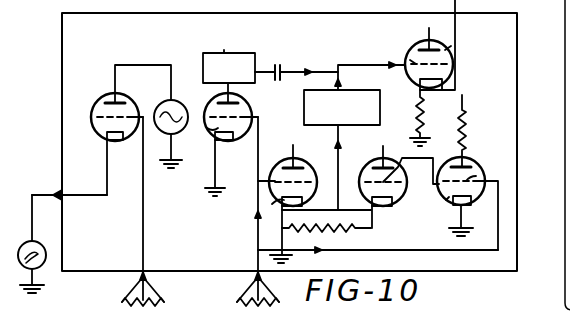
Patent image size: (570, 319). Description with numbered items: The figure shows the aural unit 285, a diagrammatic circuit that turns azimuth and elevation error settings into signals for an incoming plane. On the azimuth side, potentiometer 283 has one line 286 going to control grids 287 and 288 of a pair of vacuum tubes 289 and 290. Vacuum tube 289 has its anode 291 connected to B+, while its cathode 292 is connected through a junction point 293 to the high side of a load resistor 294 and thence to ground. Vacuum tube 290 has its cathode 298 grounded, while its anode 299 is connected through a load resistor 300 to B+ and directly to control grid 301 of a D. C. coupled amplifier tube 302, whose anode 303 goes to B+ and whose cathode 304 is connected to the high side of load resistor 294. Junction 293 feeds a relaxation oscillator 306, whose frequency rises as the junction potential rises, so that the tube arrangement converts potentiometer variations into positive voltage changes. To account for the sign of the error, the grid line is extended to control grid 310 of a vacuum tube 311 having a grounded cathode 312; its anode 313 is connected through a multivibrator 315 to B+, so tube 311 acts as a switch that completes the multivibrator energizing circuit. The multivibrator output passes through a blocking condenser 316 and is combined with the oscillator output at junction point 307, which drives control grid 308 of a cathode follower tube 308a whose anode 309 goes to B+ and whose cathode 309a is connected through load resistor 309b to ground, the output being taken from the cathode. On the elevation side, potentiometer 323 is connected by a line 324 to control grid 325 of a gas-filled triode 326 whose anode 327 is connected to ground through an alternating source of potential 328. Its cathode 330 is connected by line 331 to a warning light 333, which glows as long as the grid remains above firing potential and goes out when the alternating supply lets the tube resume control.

The potentiometer 283 is at (244, 294).
The aural unit 285 is at (289, 135).
The line 286 is at (255, 262).
The control grid 287 is at (258, 180).
The control grid 288 is at (476, 176).
The vacuum tube 289 is at (272, 204).
The vacuum tube 290 is at (446, 200).
The anode 291 is at (298, 157).
The cathode 292 is at (319, 230).
The junction point 293 is at (340, 211).
The load resistor 294 is at (340, 232).
The cathode 298 is at (462, 212).
The anode 299 is at (463, 163).
The load resistor 300 is at (467, 127).
The control grid 301 is at (400, 161).
The D. C. coupled amplifier tube 302 is at (385, 150).
The anode 303 is at (372, 153).
The cathode 304 is at (372, 212).
The relaxation oscillator 306 is at (336, 128).
The junction point 307 is at (338, 71).
The control grid 308 is at (410, 60).
The cathode follower tube 308a is at (451, 46).
The anode 309 is at (428, 44).
The cathode 309a is at (453, 70).
The load resistor 309b is at (413, 112).
The control grid 310 is at (238, 118).
The vacuum tube 311 is at (208, 129).
The cathode 312 is at (224, 164).
The anode 313 is at (228, 90).
The multivibrator 315 is at (209, 54).
The blocking condenser 316 is at (291, 60).
The elevation error potentiometer 323 is at (160, 306).
The line 324 is at (144, 203).
The control grid 325 is at (106, 117).
The gas-filled triode 326 is at (101, 98).
The anode 327 is at (117, 100).
The alternating source of potential 328 is at (181, 104).
The cathode 330 is at (120, 163).
The line 331 is at (95, 197).
The warning light 333 is at (22, 247).